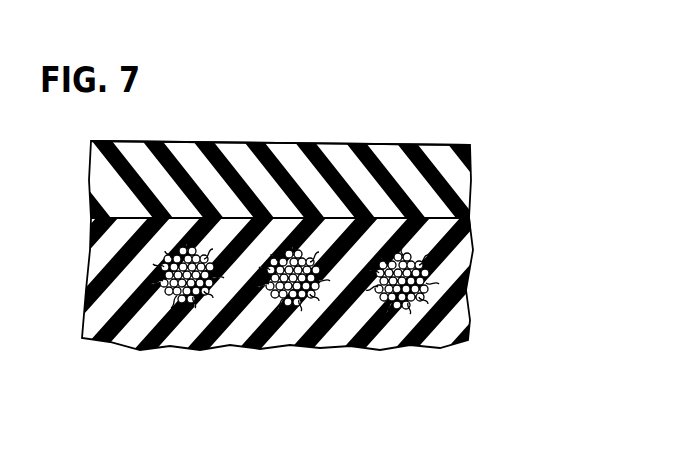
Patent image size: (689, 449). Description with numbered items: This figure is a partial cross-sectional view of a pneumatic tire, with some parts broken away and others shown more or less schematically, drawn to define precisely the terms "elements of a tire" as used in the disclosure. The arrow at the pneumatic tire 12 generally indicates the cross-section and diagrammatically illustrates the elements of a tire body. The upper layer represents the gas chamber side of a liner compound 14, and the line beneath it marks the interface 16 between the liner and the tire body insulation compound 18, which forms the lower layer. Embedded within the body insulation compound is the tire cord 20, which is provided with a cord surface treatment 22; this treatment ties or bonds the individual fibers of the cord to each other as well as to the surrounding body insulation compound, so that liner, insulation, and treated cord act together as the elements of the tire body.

The pneumatic tire 12 is at (500, 193).
The gas chamber side of liner compound 14 is at (323, 143).
The interface 16 is at (436, 224).
The tire body insulation compound 18 is at (452, 274).
The tire cord 20 is at (402, 306).
The cord surface treatment 22 is at (272, 302).